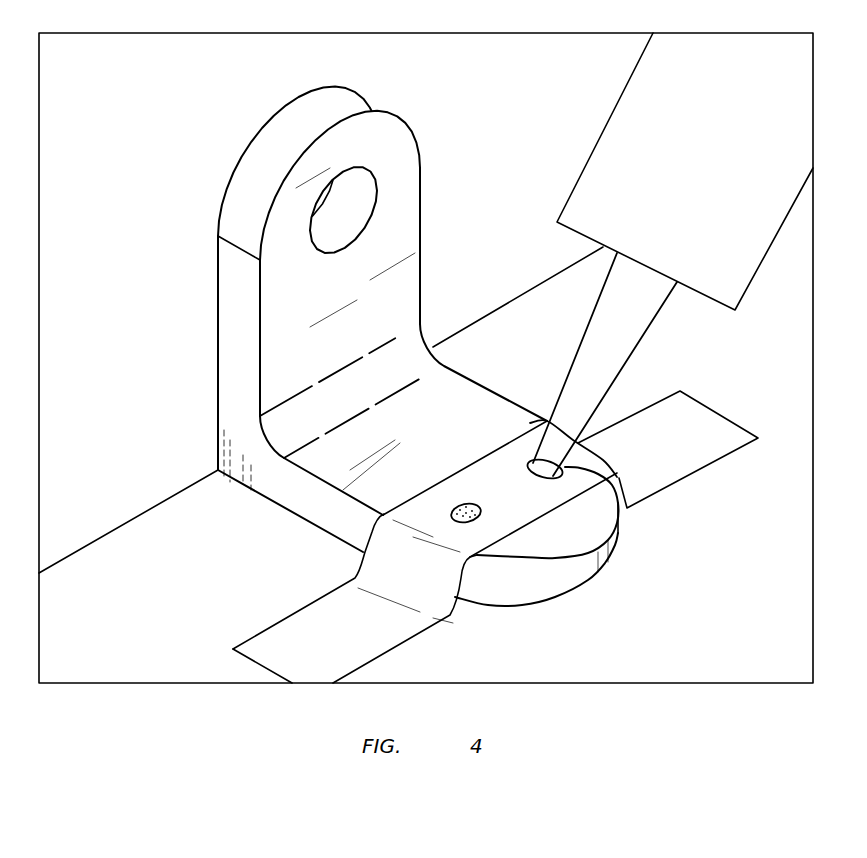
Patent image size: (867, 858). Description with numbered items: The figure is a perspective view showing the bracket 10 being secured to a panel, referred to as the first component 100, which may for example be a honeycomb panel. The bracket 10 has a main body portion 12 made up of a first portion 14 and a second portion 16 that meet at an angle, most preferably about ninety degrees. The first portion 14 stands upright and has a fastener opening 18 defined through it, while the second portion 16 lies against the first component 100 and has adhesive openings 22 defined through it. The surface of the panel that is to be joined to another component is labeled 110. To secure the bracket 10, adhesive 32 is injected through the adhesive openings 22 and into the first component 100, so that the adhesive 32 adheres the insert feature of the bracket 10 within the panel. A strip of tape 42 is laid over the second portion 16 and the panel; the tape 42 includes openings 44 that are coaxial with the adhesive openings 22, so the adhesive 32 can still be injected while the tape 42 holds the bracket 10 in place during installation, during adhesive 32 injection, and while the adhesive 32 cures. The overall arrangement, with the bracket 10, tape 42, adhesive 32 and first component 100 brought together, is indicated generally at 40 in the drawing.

The bracket 10 is at (157, 291).
The main body portion 12 is at (378, 322).
The first portion 14 is at (361, 289).
The second portion 16 is at (318, 498).
The fastener opening 18 is at (357, 196).
The adhesive opening 22 is at (537, 458).
The adhesive 32 is at (698, 203).
The welding system 40 is at (163, 121).
The tape 42 is at (283, 645).
The openings 44 is at (562, 466).
The first component 100 is at (153, 532).
The surfaces to be joined 110 is at (131, 606).